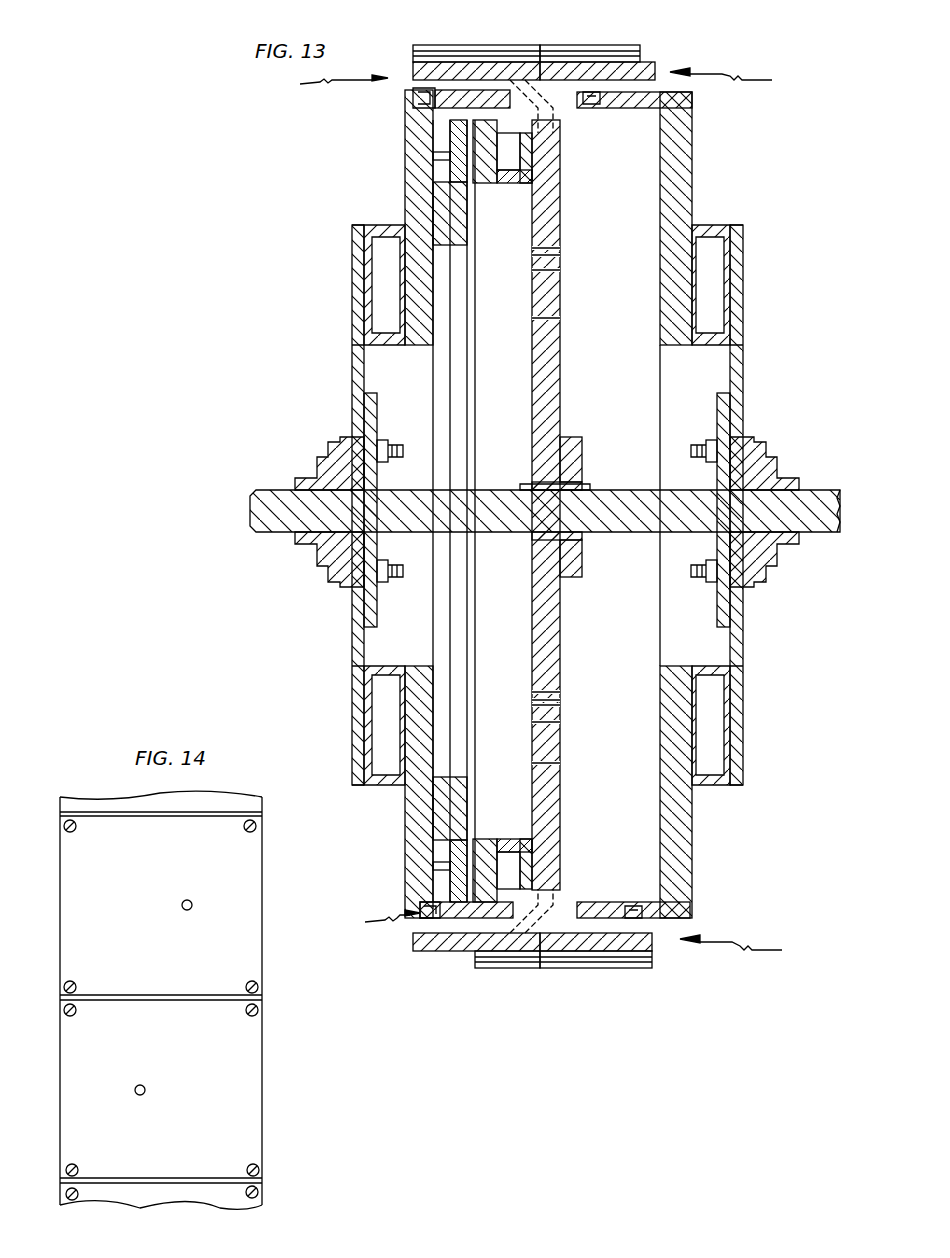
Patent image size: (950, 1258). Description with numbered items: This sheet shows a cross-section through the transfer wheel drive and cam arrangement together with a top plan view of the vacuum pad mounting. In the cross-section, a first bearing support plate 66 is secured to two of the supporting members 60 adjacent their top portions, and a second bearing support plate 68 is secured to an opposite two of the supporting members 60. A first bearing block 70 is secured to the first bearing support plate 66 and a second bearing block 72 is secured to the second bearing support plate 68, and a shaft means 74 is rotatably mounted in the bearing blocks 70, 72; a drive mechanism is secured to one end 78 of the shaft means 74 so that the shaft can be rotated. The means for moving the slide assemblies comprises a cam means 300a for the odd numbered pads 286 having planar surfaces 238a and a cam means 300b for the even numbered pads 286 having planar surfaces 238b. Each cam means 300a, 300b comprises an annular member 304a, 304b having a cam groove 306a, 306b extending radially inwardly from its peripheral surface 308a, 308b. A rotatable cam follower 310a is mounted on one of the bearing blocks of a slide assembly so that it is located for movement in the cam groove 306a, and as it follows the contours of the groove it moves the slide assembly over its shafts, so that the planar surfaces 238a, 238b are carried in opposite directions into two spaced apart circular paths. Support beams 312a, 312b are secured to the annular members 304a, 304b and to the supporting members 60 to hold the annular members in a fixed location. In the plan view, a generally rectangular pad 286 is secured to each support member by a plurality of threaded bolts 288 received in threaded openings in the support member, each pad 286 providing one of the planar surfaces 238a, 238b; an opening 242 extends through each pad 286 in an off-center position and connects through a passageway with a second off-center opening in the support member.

In FIG. 13, the supporting members 60 is at (370, 283).
In FIG. 13, the first bearing support plate 66 is at (745, 318).
In FIG. 13, the second bearing support plate 68 is at (357, 315).
In FIG. 13, the first bearing block 70 is at (770, 470).
In FIG. 13, the second bearing block 72 is at (312, 462).
In FIG. 13, the shaft means 74 is at (612, 500).
In FIG. 13, the end of the shaft means 78 is at (262, 500).
In FIG. 13, the cam means 300a is at (335, 504).
In FIG. 13, the cam means 300b is at (753, 518).
In FIG. 13, the annular member 304a is at (462, 118).
In FIG. 13, the annular member 304b is at (640, 108).
In FIG. 13, the cam groove 306a is at (425, 92).
In FIG. 13, the cam groove 306b is at (590, 95).
In FIG. 13, the peripheral surface 308a is at (483, 88).
In FIG. 13, the peripheral surface 308b is at (642, 62).
In FIG. 13, the cam follower 310a is at (458, 108).
In FIG. 13, the support beam 312a is at (412, 200).
In FIG. 13, the support beam 312b is at (690, 172).
In FIG. 14, the planar surface 238a is at (200, 980).
In FIG. 14, the planar surface 238b is at (183, 1174).
In FIG. 14, the opening 242 is at (193, 905).
In FIG. 14, the pad 286 is at (243, 950).
In FIG. 14, the threaded bolts 288 is at (72, 822).